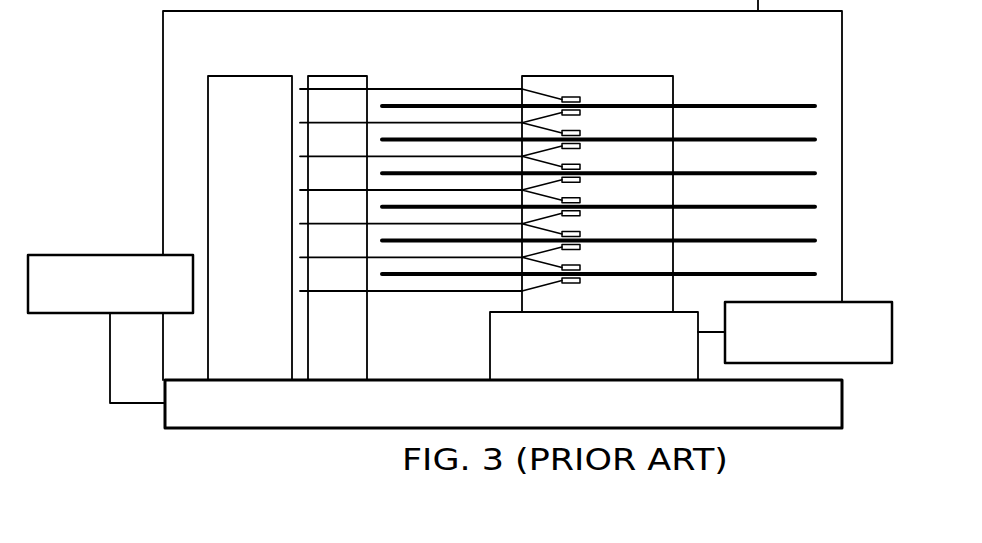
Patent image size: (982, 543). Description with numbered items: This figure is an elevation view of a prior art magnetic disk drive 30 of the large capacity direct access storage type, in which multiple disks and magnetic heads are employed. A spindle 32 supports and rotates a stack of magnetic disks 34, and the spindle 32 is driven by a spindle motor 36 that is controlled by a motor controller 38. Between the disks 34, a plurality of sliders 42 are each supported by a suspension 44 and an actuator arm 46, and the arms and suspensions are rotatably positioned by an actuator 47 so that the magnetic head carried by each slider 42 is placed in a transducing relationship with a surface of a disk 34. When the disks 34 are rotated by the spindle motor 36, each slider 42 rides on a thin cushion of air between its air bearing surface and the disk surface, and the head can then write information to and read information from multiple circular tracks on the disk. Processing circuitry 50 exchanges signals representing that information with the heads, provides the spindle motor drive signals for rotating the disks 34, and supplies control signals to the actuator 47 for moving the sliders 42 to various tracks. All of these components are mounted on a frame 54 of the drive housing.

The magnetic disk drive 30 is at (727, 72).
The spindle 32 is at (648, 75).
The magnetic disk 34 is at (815, 106).
The spindle motor 36 is at (587, 357).
The motor controller 38 is at (877, 364).
The slider 42 is at (577, 122).
The suspension 44 is at (552, 126).
The actuator arm 46 is at (472, 122).
The actuator 47 is at (250, 76).
The processing circuitry 50 is at (88, 255).
The frame 54 is at (287, 429).